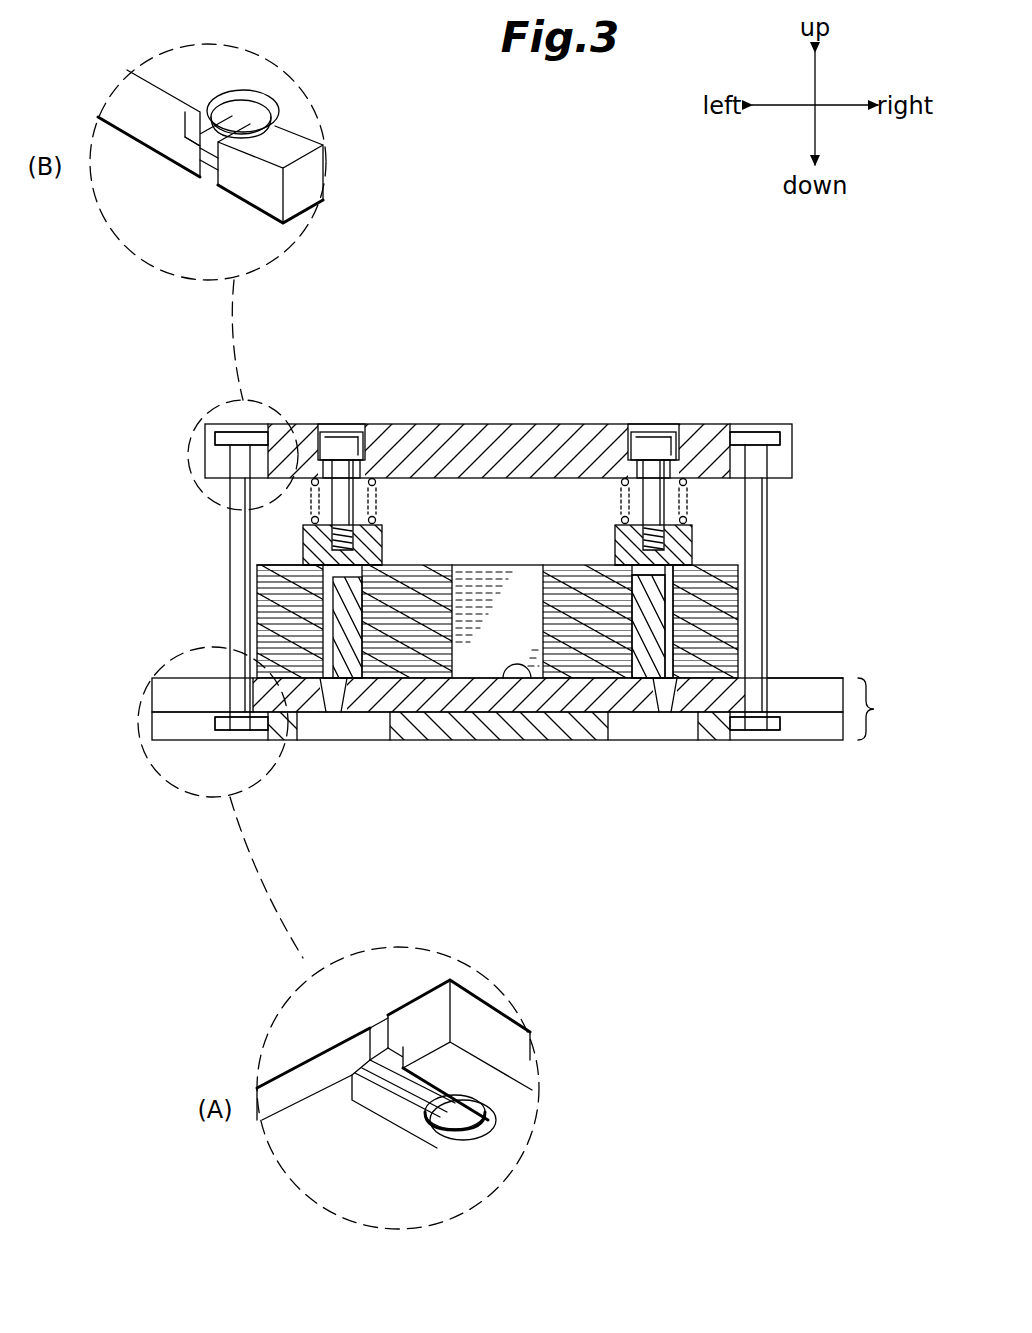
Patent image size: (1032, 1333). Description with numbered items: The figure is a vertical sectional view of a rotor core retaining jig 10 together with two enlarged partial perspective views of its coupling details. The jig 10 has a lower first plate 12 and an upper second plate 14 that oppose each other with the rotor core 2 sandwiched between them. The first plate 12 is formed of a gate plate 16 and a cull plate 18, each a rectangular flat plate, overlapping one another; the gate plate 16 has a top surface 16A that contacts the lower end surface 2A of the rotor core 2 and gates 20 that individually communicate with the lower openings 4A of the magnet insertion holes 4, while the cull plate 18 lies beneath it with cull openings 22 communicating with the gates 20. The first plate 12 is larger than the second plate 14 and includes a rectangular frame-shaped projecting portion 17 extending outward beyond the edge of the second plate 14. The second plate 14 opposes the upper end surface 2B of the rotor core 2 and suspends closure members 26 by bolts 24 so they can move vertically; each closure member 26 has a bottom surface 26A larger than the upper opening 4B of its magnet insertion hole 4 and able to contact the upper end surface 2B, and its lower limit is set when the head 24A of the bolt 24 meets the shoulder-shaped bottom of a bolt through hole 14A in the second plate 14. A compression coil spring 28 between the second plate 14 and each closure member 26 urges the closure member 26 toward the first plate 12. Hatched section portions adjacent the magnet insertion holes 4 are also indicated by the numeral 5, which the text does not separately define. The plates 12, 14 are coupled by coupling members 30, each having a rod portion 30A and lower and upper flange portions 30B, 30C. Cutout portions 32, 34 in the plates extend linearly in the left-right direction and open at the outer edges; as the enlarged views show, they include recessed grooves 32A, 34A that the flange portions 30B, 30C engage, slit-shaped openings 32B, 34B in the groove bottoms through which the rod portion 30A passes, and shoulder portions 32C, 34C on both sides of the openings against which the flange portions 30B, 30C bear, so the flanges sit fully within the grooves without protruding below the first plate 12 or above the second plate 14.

The rotor core 2 is at (705, 572).
The lower end surface of the rotor core 2A is at (476, 678).
The upper end surface of the rotor core 2B is at (277, 565).
The magnet insertion hole 4 is at (335, 640).
The lower opening of the magnet insertion hole 4A is at (665, 660).
The upper opening of the magnet insertion hole 4B is at (667, 576).
The insert cavity 5 is at (295, 600).
The rotor core retaining jig 10 is at (824, 410).
The first plate 12 is at (293, 1232).
The second plate 14 is at (528, 428).
The bolt through hole 14A is at (360, 430).
The gate plate 16 is at (573, 700).
The top surface of the gate plate 16A is at (514, 692).
The projecting portion 17 is at (820, 678).
The cull plate 18 is at (430, 728).
The gate 20 is at (330, 700).
The cull opening 22 is at (345, 728).
The bolt 24 is at (340, 495).
The head of the bolt 24A is at (342, 440).
The closure member 26 is at (372, 537).
The bottom surface of the closure member 26A is at (388, 572).
The compression coil spring 28 is at (684, 478).
The coupling member 30 is at (494, 587).
The rod portion 30A is at (242, 520).
The flange portion 30B is at (238, 732).
The flange portion 30C is at (236, 436).
The cutout portion 32 is at (165, 700).
The recessed groove 32A is at (378, 1102).
The slit-shaped opening 32B is at (383, 1042).
The shoulder portion 32C is at (367, 1078).
The cutout portion 34 is at (240, 462).
The recessed groove 34A is at (200, 102).
The slit-shaped opening 34B is at (209, 165).
The shoulder portion 34C is at (187, 132).